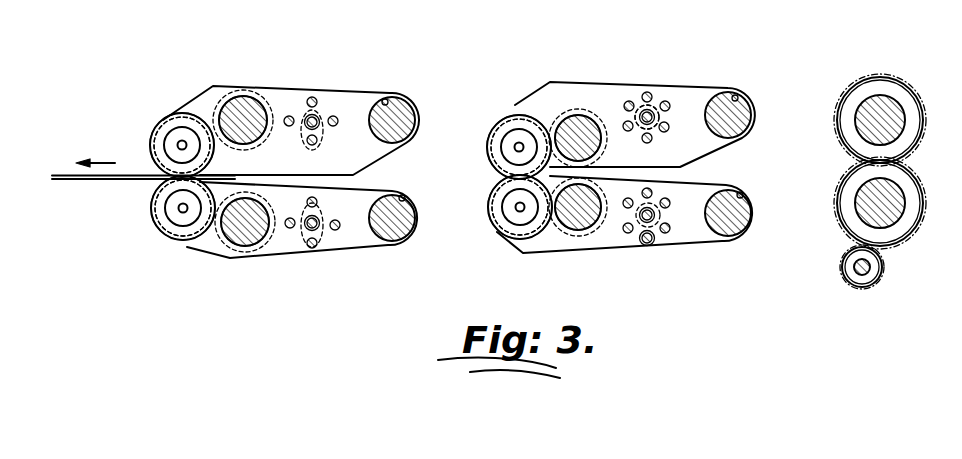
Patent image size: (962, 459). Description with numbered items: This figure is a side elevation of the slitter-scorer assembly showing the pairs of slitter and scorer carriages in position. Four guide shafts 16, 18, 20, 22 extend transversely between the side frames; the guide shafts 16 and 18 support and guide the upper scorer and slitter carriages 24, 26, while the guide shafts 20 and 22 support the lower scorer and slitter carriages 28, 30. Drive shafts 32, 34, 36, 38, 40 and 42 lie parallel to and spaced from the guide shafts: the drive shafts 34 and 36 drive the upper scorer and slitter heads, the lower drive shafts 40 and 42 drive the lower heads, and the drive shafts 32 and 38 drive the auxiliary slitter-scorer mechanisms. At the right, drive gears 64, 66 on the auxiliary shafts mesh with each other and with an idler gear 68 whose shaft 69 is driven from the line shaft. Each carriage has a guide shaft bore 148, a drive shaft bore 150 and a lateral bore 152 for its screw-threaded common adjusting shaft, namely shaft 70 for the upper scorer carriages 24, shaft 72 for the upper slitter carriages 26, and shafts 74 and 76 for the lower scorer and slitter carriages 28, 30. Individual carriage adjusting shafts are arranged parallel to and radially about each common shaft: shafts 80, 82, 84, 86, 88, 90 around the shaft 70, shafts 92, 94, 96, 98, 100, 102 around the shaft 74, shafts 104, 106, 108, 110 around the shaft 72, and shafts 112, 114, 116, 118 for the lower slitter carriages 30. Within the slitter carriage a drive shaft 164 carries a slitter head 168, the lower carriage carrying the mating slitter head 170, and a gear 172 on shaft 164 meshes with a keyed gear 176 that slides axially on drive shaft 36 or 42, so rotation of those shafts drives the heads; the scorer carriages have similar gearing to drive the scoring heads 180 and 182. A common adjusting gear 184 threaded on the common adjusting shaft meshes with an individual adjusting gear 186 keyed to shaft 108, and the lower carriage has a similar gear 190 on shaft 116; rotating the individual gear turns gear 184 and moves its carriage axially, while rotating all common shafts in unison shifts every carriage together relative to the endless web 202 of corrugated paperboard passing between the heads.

The guide shaft 16 is at (752, 110).
The guide shaft 18 is at (406, 108).
The guide shaft 20 is at (752, 223).
The guide shaft 22 is at (398, 238).
The upper scorer carriage 24 is at (718, 84).
The upper slitter carriage 26 is at (353, 85).
The lower scorer carriage 28 is at (728, 251).
The lower slitter carriage 30 is at (373, 185).
The drive shaft 32 is at (893, 108).
The drive shaft 34 is at (572, 115).
The drive shaft 36 is at (240, 105).
The drive shaft 38 is at (895, 215).
The lower drive shaft 40 is at (575, 230).
The lower drive shaft 42 is at (240, 242).
The drive gear 64 is at (880, 77).
The drive gear 66 is at (920, 193).
The idler gear 68 is at (884, 272).
The shaft 69 is at (855, 268).
The common adjusting shaft 70 is at (652, 113).
The common adjusting shaft 72 is at (305, 118).
The common adjusting shaft 74 is at (645, 242).
The common adjusting shaft 76 is at (306, 218).
The individual carriage adjusting shaft 80 is at (647, 92).
The individual carriage adjusting shaft 82 is at (669, 105).
The individual carriage adjusting shaft 84 is at (668, 129).
The individual carriage adjusting shaft 86 is at (648, 143).
The individual carriage adjusting shaft 88 is at (628, 131).
The individual carriage adjusting shaft 90 is at (626, 104).
The individual carriage adjusting shaft 92 is at (651, 193).
The individual carriage adjusting shaft 94 is at (670, 203).
The individual carriage adjusting shaft 96 is at (670, 228).
The individual carriage adjusting shaft 98 is at (649, 245).
The individual carriage adjusting shaft 100 is at (628, 233).
The individual carriage adjusting shaft 102 is at (628, 198).
The individual carriage adjusting shaft 104 is at (312, 97).
The individual carriage adjusting shaft 106 is at (337, 126).
The individual carriage adjusting shaft 108 is at (313, 146).
The individual carriage adjusting shaft 110 is at (289, 127).
The individual carriage adjusting shaft 112 is at (318, 202).
The individual carriage adjusting shaft 114 is at (338, 230).
The individual carriage adjusting shaft 116 is at (312, 250).
The individual carriage adjusting shaft 118 is at (290, 230).
The guide shaft bore 148 is at (388, 100).
The drive shaft bore 150 is at (250, 106).
The lateral bore 152 is at (660, 115).
The drive shaft 164 is at (182, 145).
The slitter head 168 is at (178, 113).
The mating slitter head 170 is at (163, 240).
The gear 172 is at (197, 105).
The gear 176 is at (224, 88).
The scoring head 180 is at (512, 115).
The scoring head 182 is at (508, 240).
The common adjusting gear 184 is at (318, 120).
The individual adjusting gear 186 is at (323, 147).
The gear 190 is at (340, 258).
The endless web of corrugated paperboard 202 is at (52, 176).